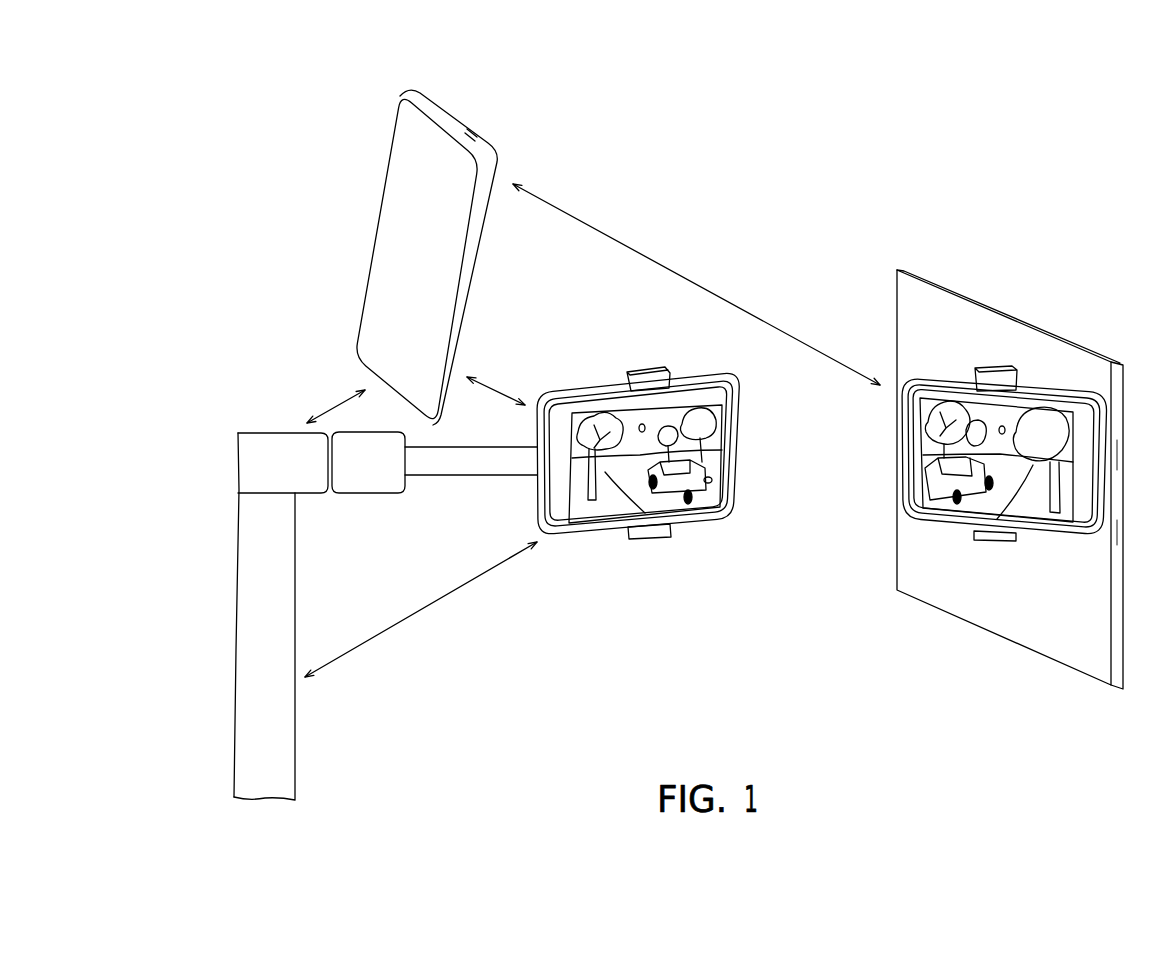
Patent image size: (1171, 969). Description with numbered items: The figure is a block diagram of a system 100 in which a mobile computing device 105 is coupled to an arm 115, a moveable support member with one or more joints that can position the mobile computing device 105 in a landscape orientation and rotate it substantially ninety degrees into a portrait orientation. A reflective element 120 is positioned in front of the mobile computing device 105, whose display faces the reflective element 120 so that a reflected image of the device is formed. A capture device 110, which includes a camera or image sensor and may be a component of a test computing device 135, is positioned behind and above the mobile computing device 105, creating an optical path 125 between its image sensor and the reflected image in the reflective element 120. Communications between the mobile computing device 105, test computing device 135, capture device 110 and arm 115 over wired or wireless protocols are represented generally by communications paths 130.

The system 100 is at (1002, 88).
The mobile computing device 105 is at (722, 518).
The capture device 110 is at (507, 140).
The arm 115 is at (246, 428).
The reflective element 120 is at (897, 293).
The optical path 125 is at (645, 256).
The communications paths 130 is at (328, 410).
The test computing device 135 is at (387, 155).